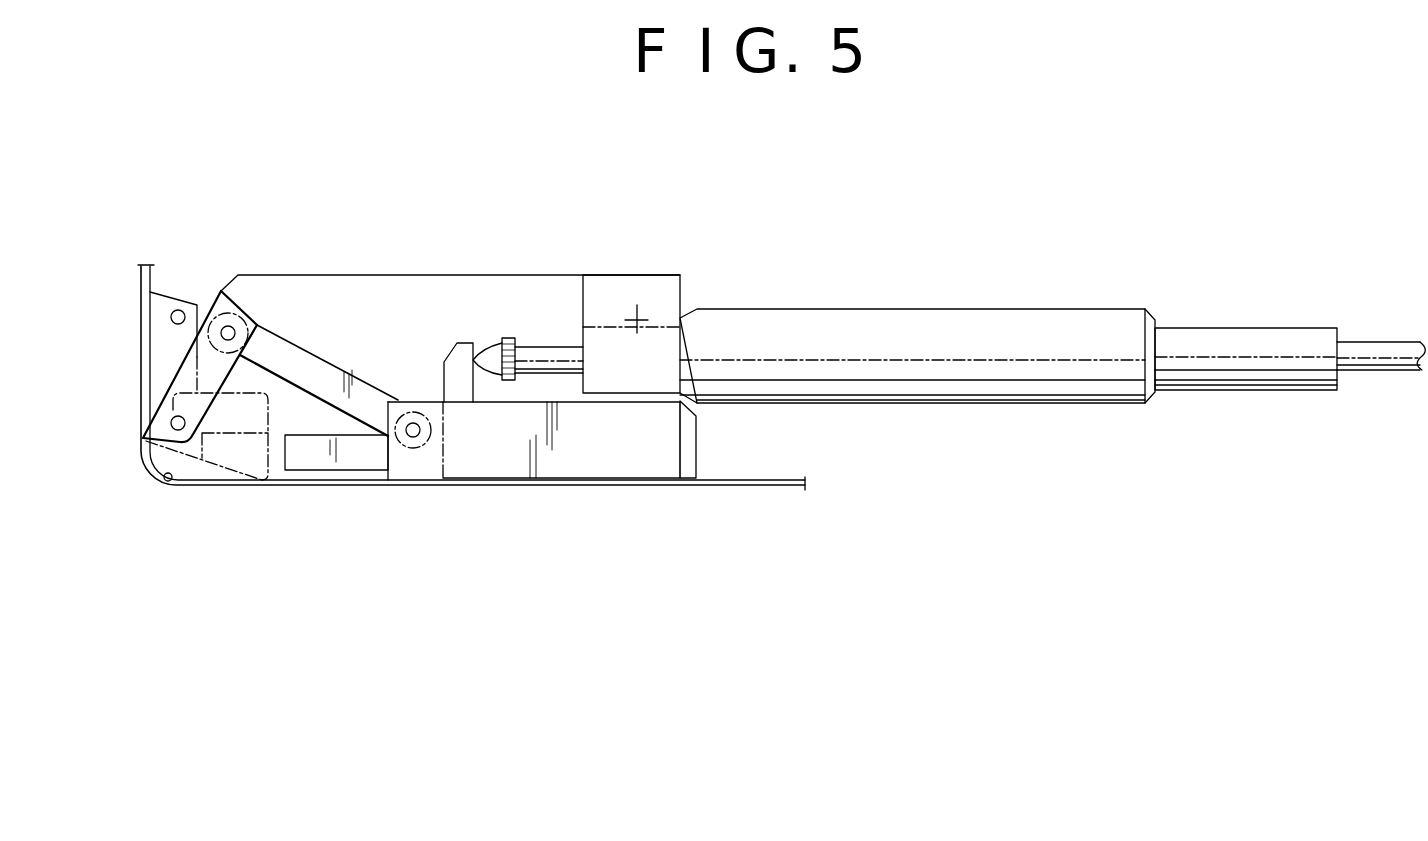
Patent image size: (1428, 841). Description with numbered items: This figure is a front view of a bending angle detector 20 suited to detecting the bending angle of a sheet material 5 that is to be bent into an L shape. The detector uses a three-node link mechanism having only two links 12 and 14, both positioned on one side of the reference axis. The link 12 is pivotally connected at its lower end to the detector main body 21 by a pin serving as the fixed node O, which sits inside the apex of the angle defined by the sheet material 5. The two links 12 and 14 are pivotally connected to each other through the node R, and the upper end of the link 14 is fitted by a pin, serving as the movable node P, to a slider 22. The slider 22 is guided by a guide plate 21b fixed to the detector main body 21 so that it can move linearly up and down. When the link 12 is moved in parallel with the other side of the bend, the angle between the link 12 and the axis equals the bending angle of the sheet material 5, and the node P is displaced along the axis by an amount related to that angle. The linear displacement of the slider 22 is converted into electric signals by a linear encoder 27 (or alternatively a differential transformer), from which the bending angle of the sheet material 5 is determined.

The sheet material 5 is at (238, 487).
The link 12 is at (207, 362).
The link 14 is at (316, 368).
The bending angle detector 20 is at (488, 494).
The detector main body 21 is at (497, 288).
The guide plate 21b is at (357, 482).
The slider 22 is at (600, 453).
The linear encoder 27 is at (818, 333).
The node R is at (235, 322).
The node O is at (172, 422).
The node P is at (413, 423).